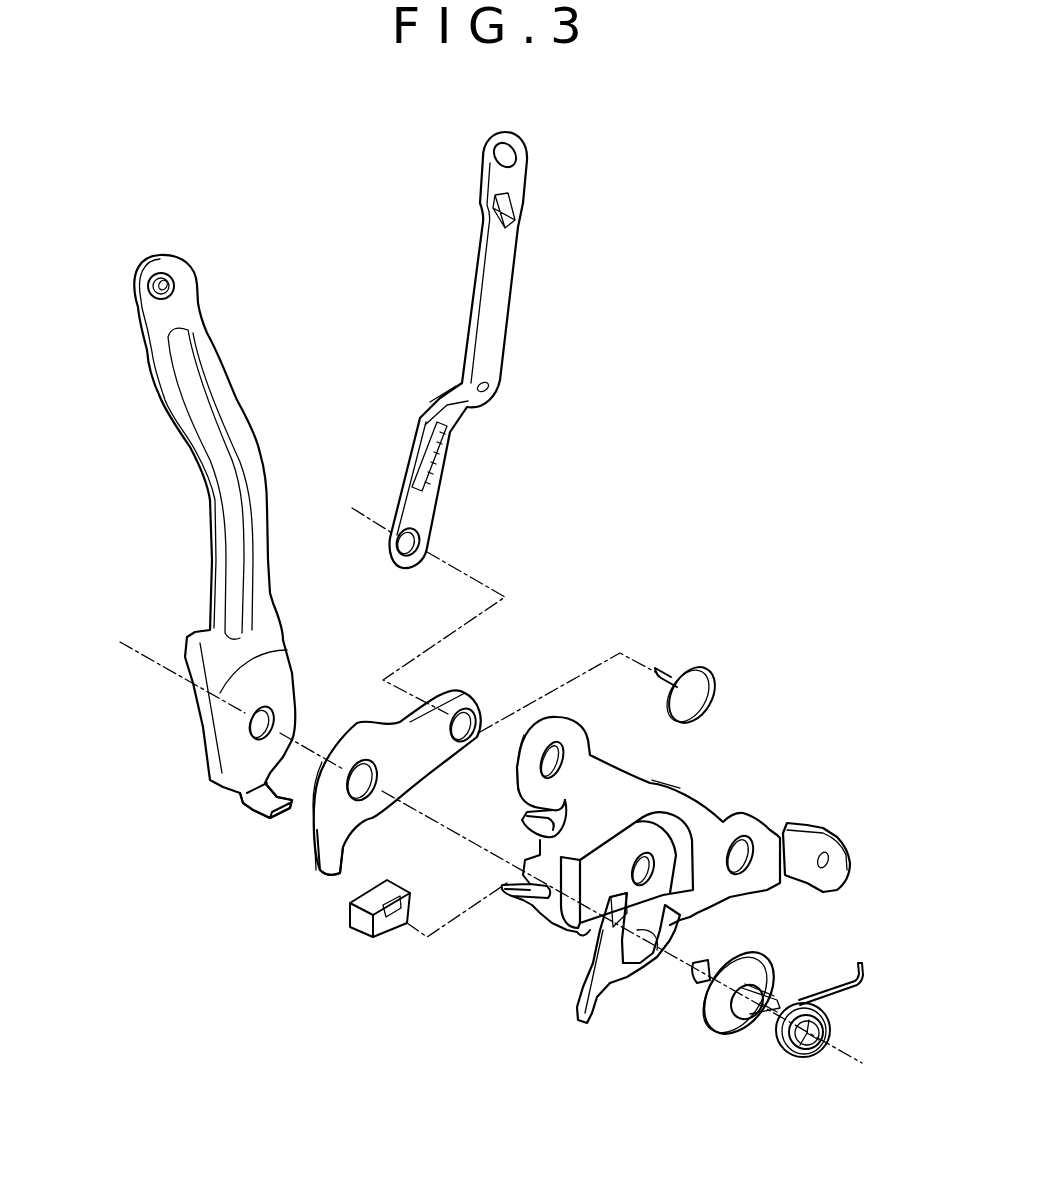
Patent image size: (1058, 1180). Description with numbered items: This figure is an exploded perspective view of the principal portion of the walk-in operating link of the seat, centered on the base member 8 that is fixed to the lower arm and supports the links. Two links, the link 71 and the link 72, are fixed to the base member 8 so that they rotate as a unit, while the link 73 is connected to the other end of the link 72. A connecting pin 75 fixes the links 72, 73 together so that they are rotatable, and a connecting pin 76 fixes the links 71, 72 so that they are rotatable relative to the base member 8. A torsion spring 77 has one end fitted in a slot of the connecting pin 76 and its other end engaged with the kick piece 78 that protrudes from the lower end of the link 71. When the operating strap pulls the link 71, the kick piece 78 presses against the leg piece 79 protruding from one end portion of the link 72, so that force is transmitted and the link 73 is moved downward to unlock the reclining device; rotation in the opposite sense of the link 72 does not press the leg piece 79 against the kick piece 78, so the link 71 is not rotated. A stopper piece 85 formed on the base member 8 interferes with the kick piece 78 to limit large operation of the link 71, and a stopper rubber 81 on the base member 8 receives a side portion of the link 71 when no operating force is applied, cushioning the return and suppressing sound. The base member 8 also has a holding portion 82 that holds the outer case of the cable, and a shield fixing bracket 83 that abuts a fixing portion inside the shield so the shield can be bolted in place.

The base member 8 is at (620, 783).
The link 71 is at (172, 433).
The link 72 is at (423, 760).
The link 73 is at (414, 506).
The connecting pin 75 is at (700, 690).
The connecting pin 76 is at (730, 1020).
The torsion spring 77 is at (810, 1058).
The kick piece 78 is at (282, 818).
The leg piece 79 is at (335, 867).
The stopper rubber 81 is at (360, 922).
The holding portion 82 is at (527, 893).
The shield fixing bracket 83 is at (838, 825).
The stopper piece 85 is at (580, 1017).